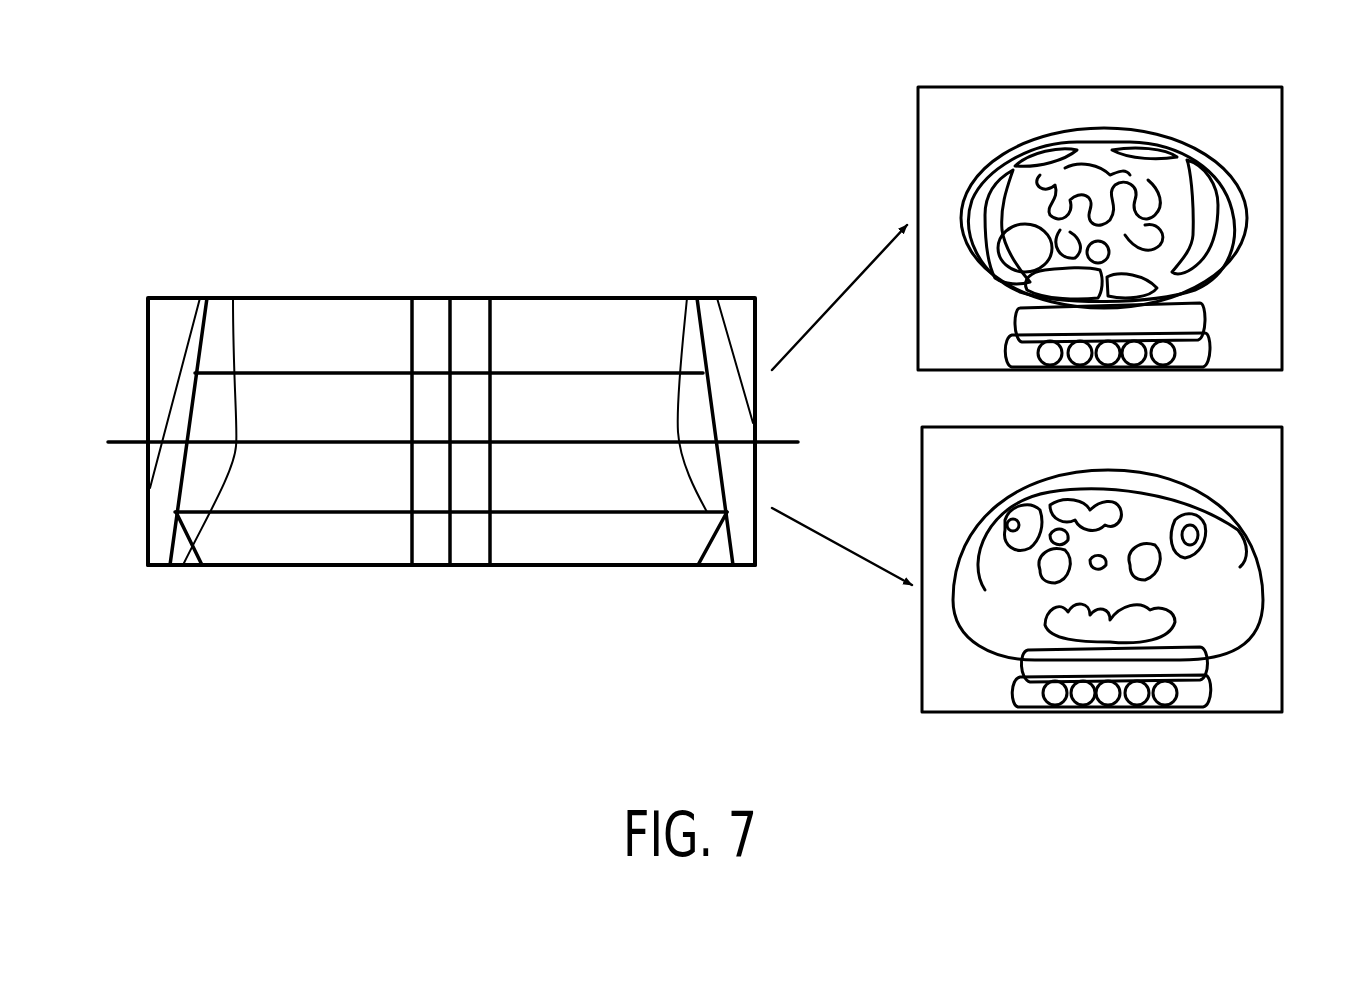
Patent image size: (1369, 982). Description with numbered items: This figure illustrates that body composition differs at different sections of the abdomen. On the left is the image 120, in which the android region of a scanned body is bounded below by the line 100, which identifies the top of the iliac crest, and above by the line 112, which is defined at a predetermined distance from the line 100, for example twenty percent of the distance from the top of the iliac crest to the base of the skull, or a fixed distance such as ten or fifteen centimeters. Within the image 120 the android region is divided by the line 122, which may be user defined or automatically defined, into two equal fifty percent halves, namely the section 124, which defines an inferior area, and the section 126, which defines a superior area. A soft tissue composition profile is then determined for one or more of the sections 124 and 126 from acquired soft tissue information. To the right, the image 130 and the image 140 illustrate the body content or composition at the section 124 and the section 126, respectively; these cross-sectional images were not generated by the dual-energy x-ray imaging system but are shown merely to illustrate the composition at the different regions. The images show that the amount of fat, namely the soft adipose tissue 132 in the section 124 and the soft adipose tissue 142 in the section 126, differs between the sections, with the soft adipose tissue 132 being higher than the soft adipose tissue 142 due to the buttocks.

The line identifying the top of the iliac crest 100 is at (583, 512).
The line 112 is at (320, 373).
The image 120 is at (107, 538).
The line 122 is at (778, 442).
The section 124 is at (451, 477).
The section 126 is at (449, 407).
The image 130 is at (1133, 608).
The soft adipose tissue 132 is at (1198, 493).
The image 140 is at (1119, 199).
The soft adipose tissue 142 is at (1143, 137).